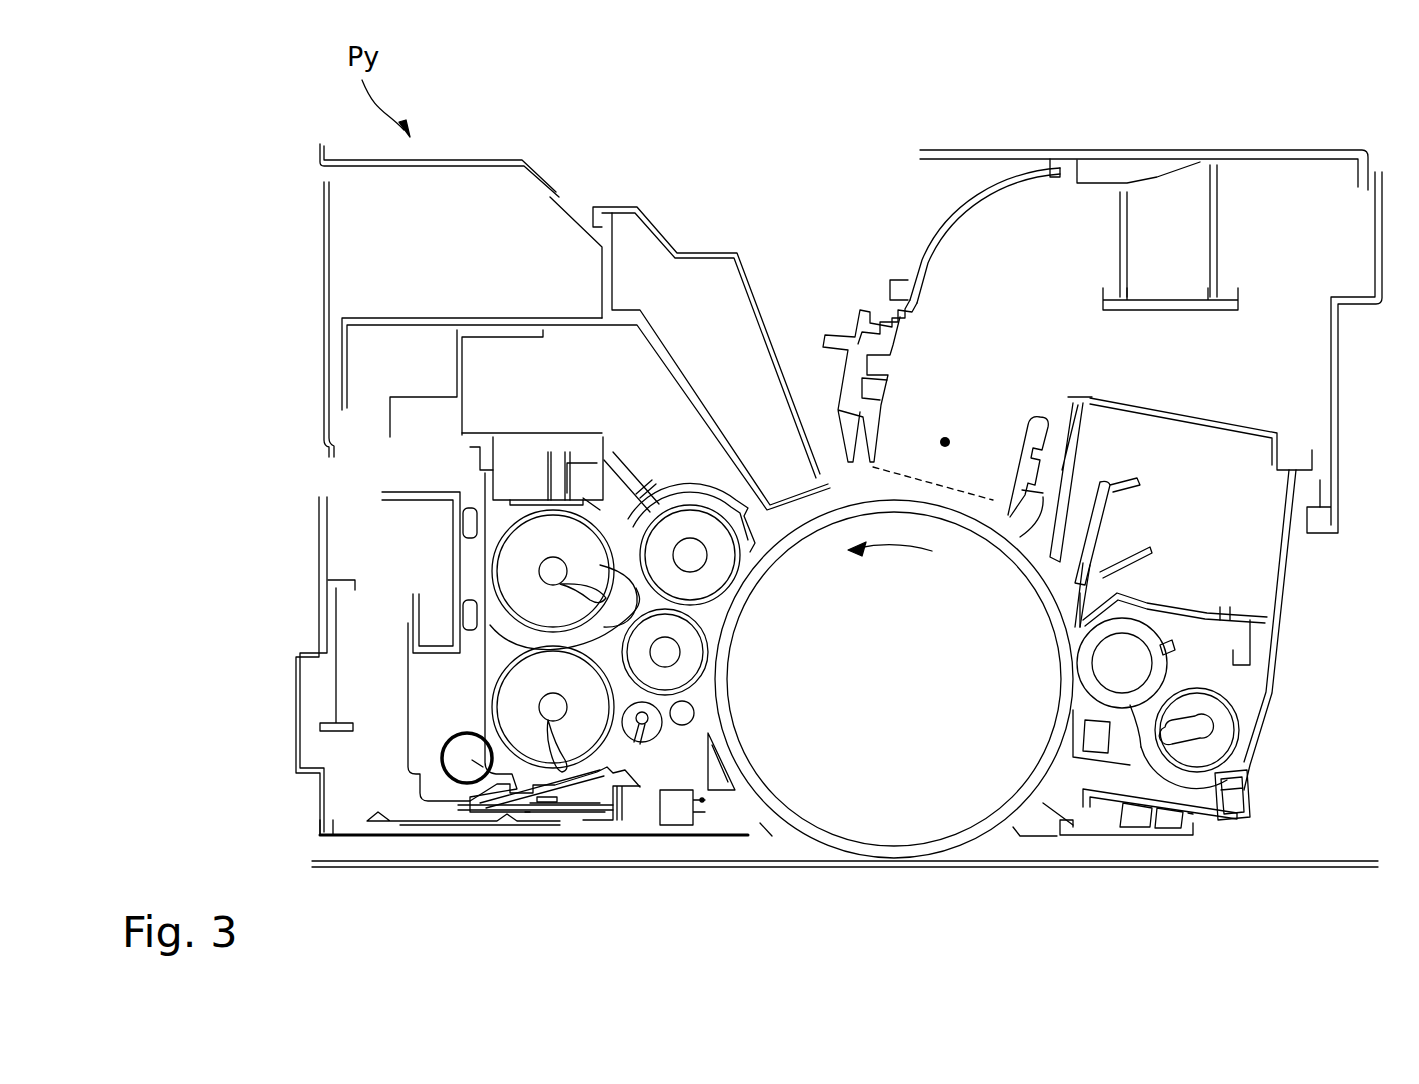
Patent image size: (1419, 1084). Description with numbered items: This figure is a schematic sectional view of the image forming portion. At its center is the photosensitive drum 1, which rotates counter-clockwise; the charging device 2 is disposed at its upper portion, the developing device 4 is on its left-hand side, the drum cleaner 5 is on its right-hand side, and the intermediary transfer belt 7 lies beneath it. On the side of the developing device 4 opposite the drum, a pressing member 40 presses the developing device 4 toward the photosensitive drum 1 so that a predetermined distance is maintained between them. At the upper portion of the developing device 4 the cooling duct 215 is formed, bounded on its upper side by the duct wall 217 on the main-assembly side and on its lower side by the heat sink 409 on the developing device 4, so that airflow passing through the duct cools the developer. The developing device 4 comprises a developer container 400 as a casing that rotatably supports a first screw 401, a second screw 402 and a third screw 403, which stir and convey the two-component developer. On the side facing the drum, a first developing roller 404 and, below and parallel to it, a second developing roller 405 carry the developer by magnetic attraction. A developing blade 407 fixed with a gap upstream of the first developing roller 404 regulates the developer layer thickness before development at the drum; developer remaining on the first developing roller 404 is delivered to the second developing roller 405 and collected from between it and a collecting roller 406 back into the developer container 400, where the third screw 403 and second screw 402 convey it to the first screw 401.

The photosensitive drum 1 is at (984, 840).
The charging device 2 is at (950, 393).
The developing device 4 is at (467, 480).
The drum cleaner 5 is at (1283, 610).
The intermediary transfer belt 7 is at (1228, 869).
The pressing member 40 is at (468, 527).
The cooling duct 215 is at (586, 420).
The duct wall 217 is at (505, 440).
The developer container 400 is at (555, 778).
The first screw 401 is at (503, 567).
The second screw 402 is at (503, 705).
The third screw 403 is at (638, 745).
The first developing roller 404 is at (696, 525).
The second developing roller 405 is at (666, 675).
The collecting roller 406 is at (688, 720).
The developing blade 407 is at (653, 492).
The heat sink 409 is at (468, 466).